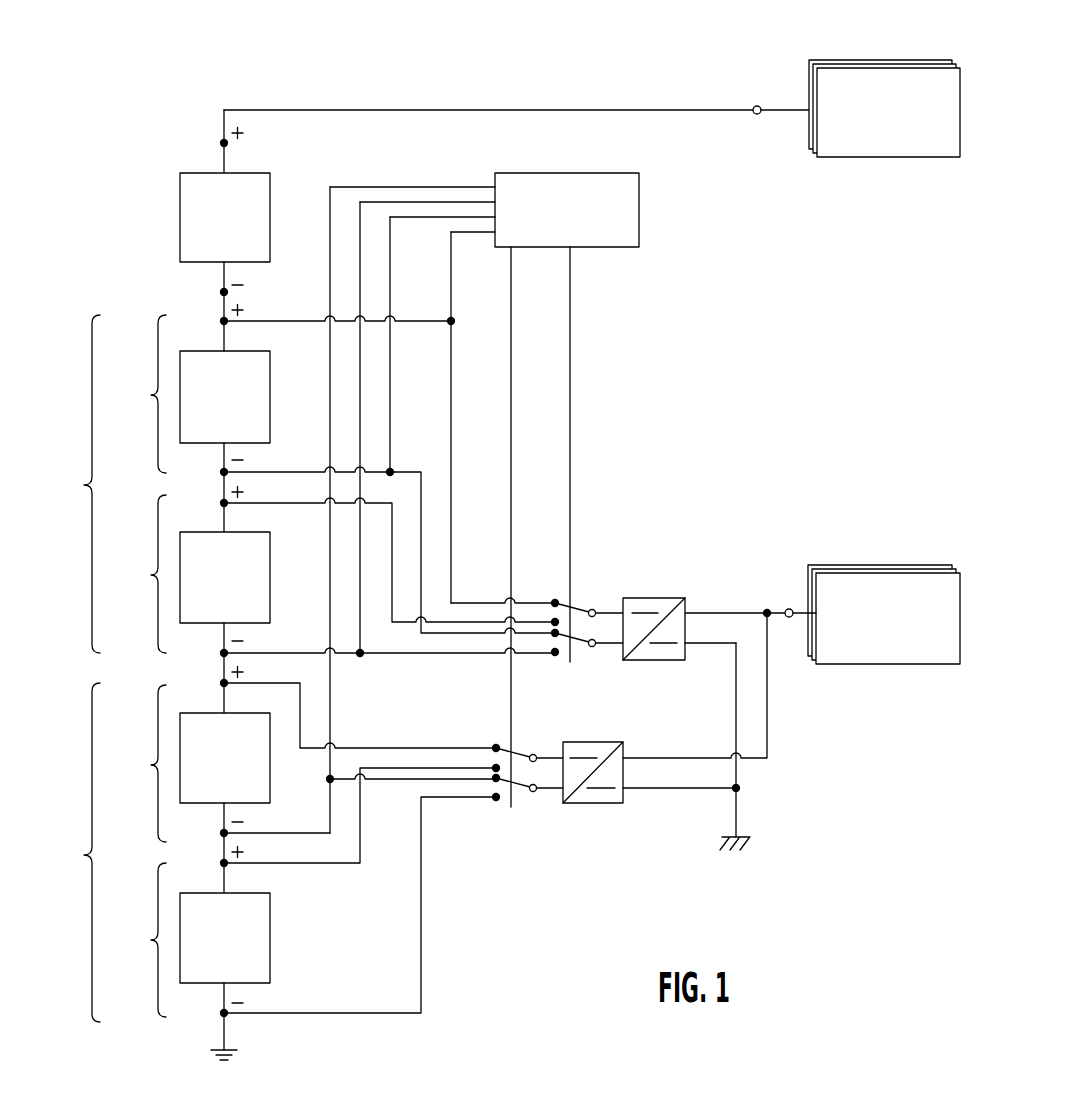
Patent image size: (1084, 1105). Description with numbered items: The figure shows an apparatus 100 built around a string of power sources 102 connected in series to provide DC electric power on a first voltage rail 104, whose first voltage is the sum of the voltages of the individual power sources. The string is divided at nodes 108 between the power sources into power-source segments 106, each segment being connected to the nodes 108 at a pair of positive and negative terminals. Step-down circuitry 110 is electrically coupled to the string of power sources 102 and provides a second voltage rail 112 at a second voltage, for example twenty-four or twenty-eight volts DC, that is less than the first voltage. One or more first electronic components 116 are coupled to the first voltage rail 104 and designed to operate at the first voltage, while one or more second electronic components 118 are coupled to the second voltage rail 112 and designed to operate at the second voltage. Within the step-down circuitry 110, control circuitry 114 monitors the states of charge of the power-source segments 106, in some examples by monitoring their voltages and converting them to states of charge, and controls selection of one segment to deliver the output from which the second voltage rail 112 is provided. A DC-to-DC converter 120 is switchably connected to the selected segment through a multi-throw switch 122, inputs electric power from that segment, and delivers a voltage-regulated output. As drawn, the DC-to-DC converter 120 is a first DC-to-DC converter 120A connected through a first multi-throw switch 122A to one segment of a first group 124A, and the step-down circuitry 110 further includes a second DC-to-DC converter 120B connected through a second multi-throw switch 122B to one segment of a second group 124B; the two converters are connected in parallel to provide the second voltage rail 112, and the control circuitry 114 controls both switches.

The apparatus 100 is at (553, 40).
The power sources 102 is at (287, 160).
The first voltage rail 104 is at (745, 100).
The power-source segments 106 is at (194, 683).
The nodes 108 is at (224, 320).
The step-down circuitry 110 is at (810, 305).
The second voltage rail 112 is at (788, 607).
The control circuitry 114 is at (640, 211).
The first electronic components 116 is at (897, 59).
The second electronic components 118 is at (893, 566).
The DC-to-DC converter 120 is at (665, 688).
The first DC-to-DC converter 120A is at (655, 661).
The second DC-to-DC converter 120B is at (594, 741).
The multi-throw switch 122 is at (567, 690).
The first multi-throw switch 122A is at (582, 661).
The second multi-throw switch 122B is at (520, 799).
The first group of power-source segments 124A is at (72, 484).
The second group of power-source segments 124B is at (72, 852).